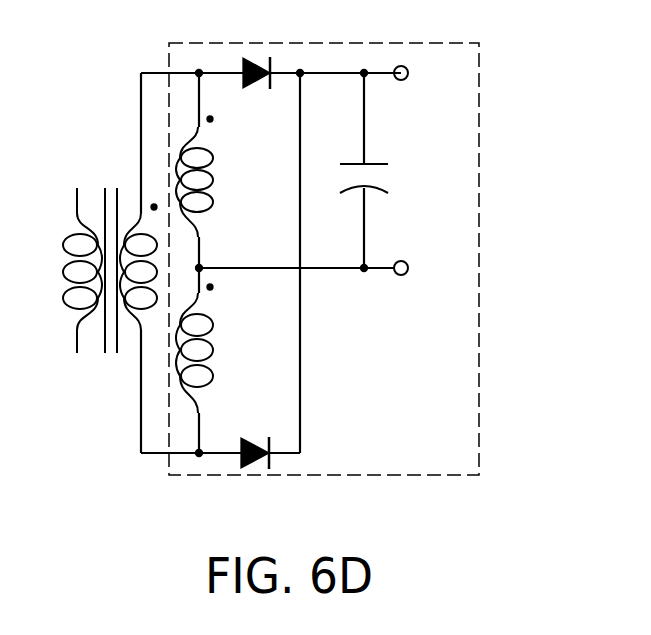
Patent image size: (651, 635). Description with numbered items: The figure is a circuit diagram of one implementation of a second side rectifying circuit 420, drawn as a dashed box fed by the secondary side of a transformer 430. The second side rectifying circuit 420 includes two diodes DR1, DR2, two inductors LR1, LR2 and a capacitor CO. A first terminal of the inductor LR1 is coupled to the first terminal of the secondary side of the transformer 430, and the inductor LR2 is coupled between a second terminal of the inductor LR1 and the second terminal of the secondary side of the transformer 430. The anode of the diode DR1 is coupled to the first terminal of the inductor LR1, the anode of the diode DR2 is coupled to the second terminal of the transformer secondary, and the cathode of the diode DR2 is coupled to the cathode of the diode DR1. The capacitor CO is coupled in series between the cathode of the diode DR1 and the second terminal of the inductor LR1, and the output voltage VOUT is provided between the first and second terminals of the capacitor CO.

The second side rectifying circuit 420 is at (361, 259).
The transformer 430 is at (110, 364).
The diode DR1 is at (263, 93).
The diode DR2 is at (259, 433).
The inductor LR1 is at (219, 182).
The inductor LR2 is at (220, 353).
The capacitor CO is at (372, 159).
The output voltage VOUT is at (431, 180).